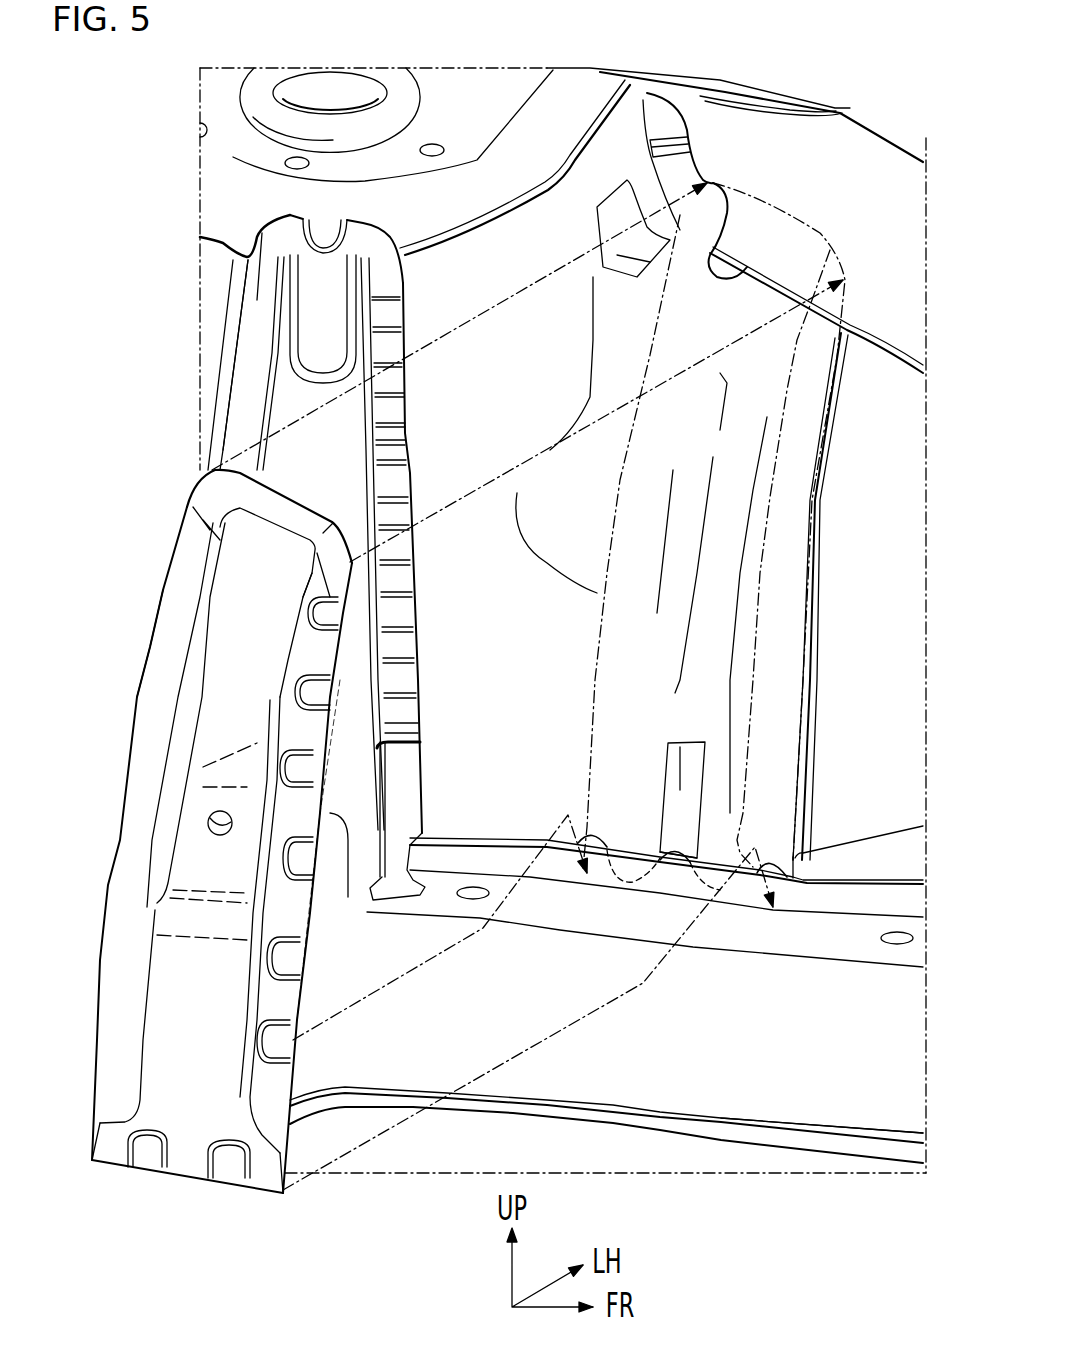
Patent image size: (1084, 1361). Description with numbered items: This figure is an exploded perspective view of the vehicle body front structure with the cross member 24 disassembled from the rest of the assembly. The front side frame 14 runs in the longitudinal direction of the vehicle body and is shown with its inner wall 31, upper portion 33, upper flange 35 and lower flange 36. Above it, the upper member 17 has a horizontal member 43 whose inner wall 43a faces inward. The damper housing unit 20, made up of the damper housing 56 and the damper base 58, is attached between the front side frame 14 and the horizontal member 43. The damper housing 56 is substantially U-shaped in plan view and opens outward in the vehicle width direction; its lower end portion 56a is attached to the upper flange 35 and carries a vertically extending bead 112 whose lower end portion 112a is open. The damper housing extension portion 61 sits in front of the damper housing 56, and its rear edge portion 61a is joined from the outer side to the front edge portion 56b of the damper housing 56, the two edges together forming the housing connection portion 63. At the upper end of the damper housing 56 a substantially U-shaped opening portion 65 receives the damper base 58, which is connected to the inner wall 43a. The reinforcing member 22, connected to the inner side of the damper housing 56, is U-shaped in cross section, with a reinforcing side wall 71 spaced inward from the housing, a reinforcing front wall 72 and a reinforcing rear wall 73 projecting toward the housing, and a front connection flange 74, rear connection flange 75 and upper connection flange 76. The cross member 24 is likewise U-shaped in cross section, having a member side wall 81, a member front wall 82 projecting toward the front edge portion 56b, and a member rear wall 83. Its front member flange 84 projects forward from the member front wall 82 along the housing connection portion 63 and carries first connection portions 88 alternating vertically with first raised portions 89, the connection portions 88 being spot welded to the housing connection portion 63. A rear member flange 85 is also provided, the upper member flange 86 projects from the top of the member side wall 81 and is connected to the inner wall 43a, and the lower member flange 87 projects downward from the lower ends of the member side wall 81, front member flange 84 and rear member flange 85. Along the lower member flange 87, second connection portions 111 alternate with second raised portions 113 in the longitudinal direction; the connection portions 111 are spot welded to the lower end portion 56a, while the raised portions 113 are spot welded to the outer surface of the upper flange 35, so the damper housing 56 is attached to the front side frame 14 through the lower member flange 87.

The front side frame 14 is at (804, 1113).
The upper member 17 is at (698, 88).
The damper housing unit 20 is at (105, 80).
The reinforcing member 22 is at (347, 318).
The cross member 24 is at (112, 750).
The inner wall 31 is at (740, 1080).
The upper portion 33 is at (813, 938).
The upper flange 35 is at (888, 895).
The lower flange 36 is at (838, 1147).
The horizontal member 43 is at (813, 107).
The inner wall 43a is at (703, 125).
The damper housing 56 is at (200, 265).
The lower end portion 56a is at (633, 847).
The front edge portion 56b is at (790, 550).
The damper base 58 is at (230, 130).
The damper housing extension portion 61 is at (880, 463).
The rear edge portion 61a is at (773, 497).
The housing connection portion 63 is at (787, 633).
The opening portion 65 is at (448, 267).
The reinforcing side wall 71 is at (337, 423).
The reinforcing front wall 72 is at (333, 387).
The reinforcing rear wall 73 is at (273, 360).
The front connection flange 74 is at (400, 480).
The rear connection flange 75 is at (240, 417).
The upper connection flange 76 is at (360, 230).
The member side wall 81 is at (230, 660).
The member front wall 82 is at (330, 712).
The member rear wall 83 is at (163, 700).
The front member flange 84 is at (317, 807).
The rear member flange 85 is at (137, 833).
The upper member flange 86 is at (270, 503).
The lower member flange 87 is at (192, 1196).
The first connection portions 88 is at (323, 697).
The first raised portions 89 is at (317, 657).
The second connection portions 111 is at (148, 1160).
The bead 112 is at (680, 793).
The lower end portion 112a is at (680, 843).
The second raised portions 113 is at (103, 1137).